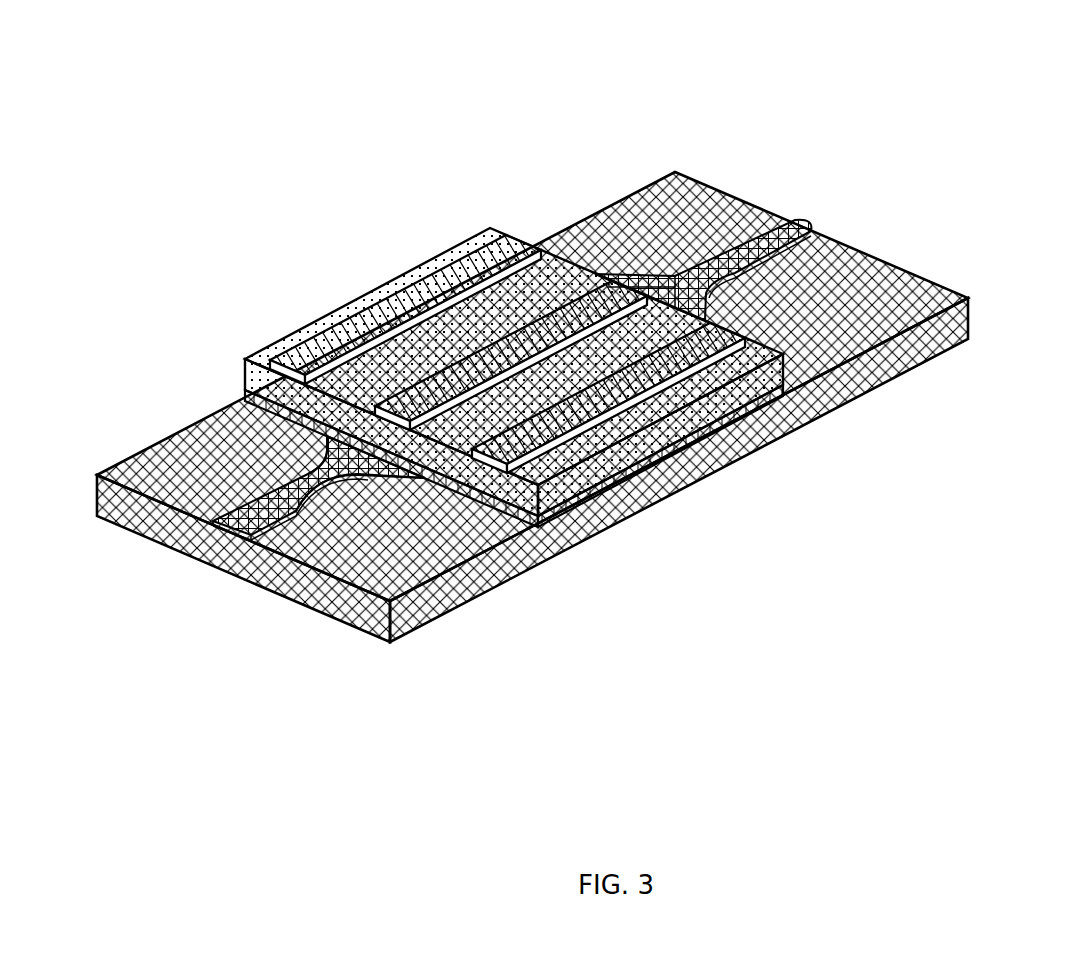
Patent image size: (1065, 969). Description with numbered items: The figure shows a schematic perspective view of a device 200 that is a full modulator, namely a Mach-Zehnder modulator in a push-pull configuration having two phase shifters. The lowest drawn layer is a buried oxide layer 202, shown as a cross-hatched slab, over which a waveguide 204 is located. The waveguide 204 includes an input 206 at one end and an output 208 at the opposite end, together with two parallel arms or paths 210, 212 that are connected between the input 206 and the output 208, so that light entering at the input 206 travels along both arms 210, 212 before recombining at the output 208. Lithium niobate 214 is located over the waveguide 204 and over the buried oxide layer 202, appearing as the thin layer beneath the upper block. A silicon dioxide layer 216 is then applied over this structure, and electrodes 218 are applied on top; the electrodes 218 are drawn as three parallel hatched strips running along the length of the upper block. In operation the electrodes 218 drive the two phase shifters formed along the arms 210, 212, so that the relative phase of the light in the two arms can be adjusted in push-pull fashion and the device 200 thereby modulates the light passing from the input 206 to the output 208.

The device 200 is at (562, 385).
The buried oxide layer 202 is at (572, 450).
The waveguide 204 is at (575, 284).
The input 206 is at (330, 400).
The output 208 is at (787, 215).
The arm 210 is at (405, 468).
The arm 212 is at (318, 430).
The lithium niobate 214 is at (707, 413).
The silicon dioxide layer 216 is at (880, 307).
The electrodes 218 is at (325, 302).